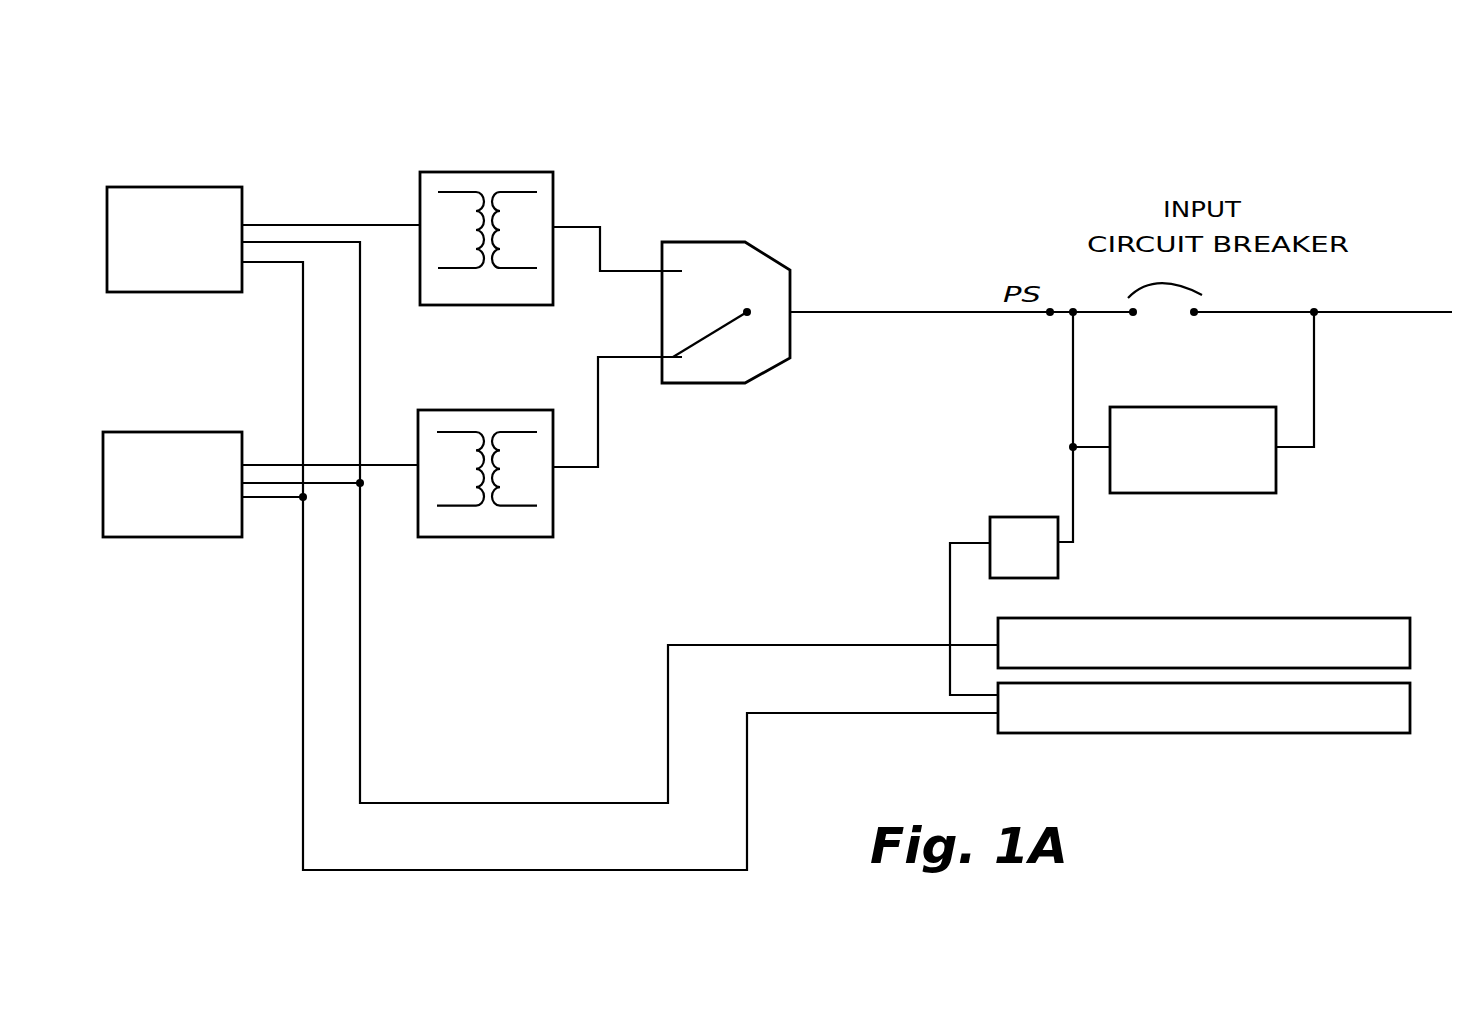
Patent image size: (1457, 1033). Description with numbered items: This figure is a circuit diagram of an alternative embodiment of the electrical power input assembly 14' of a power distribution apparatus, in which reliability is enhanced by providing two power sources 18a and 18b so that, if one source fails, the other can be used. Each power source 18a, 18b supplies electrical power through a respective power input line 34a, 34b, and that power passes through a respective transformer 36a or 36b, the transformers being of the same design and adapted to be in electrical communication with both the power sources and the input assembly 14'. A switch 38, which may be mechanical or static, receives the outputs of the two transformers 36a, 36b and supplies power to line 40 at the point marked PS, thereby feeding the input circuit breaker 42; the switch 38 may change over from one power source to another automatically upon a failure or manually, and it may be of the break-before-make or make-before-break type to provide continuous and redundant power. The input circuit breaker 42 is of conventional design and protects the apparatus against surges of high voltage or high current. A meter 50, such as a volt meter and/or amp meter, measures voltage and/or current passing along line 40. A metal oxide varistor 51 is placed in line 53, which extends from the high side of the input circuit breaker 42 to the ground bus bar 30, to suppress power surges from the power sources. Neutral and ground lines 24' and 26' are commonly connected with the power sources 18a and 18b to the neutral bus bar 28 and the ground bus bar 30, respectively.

The input assembly 14' is at (686, 89).
The power source 18a is at (195, 187).
The power source 18b is at (215, 432).
The power input line 34a is at (305, 225).
The power input line 34b is at (383, 465).
The transformer 36a is at (513, 172).
The transformer 36b is at (515, 410).
The switch 38 is at (735, 242).
The line 40 is at (1061, 312).
The input circuit breaker 42 is at (1157, 283).
The meter 50 is at (1260, 493).
The metal oxide varistor 51 is at (1018, 517).
The line 53 is at (1068, 475).
The neutral bus bar 28 is at (1275, 618).
The ground bus bar 30 is at (1300, 733).
The neutral line 24' is at (620, 522).
The ground line 26' is at (606, 566).